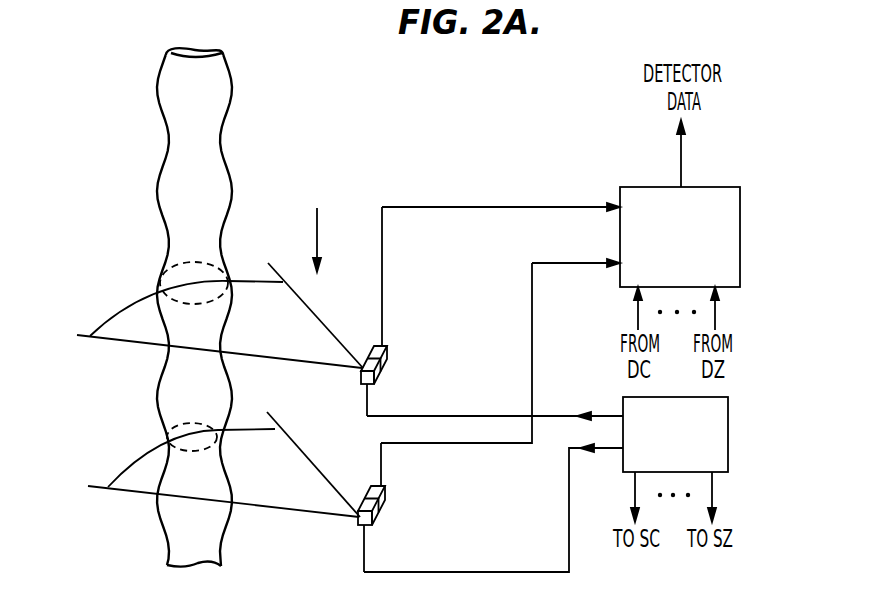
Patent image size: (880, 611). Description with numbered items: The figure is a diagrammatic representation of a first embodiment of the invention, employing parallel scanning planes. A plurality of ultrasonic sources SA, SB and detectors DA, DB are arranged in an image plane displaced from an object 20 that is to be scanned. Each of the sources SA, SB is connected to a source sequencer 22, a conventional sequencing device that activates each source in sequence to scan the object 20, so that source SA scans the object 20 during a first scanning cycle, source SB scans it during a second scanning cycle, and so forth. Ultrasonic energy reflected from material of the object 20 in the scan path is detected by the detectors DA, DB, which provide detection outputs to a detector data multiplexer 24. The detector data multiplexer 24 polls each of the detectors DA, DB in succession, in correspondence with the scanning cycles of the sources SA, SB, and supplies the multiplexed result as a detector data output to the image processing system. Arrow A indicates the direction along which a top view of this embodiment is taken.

The object 20 is at (228, 131).
The source sequencer 22 is at (728, 432).
The detector data multiplexer 24 is at (740, 198).
The detector DA is at (387, 352).
The source SA is at (376, 382).
The detector DB is at (385, 493).
The source SB is at (374, 521).
The arrow A is at (325, 240).